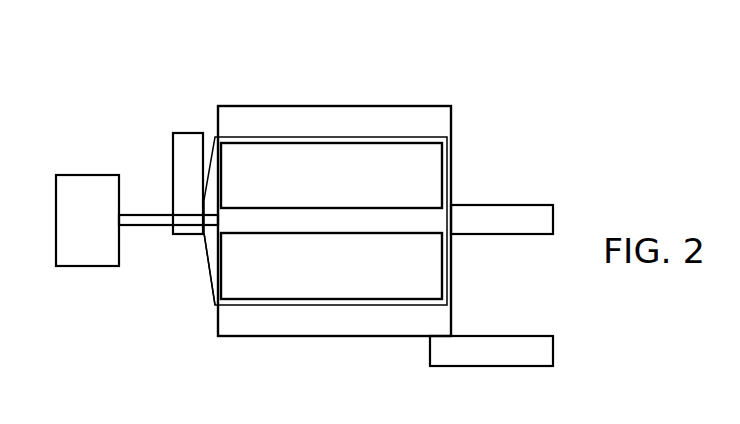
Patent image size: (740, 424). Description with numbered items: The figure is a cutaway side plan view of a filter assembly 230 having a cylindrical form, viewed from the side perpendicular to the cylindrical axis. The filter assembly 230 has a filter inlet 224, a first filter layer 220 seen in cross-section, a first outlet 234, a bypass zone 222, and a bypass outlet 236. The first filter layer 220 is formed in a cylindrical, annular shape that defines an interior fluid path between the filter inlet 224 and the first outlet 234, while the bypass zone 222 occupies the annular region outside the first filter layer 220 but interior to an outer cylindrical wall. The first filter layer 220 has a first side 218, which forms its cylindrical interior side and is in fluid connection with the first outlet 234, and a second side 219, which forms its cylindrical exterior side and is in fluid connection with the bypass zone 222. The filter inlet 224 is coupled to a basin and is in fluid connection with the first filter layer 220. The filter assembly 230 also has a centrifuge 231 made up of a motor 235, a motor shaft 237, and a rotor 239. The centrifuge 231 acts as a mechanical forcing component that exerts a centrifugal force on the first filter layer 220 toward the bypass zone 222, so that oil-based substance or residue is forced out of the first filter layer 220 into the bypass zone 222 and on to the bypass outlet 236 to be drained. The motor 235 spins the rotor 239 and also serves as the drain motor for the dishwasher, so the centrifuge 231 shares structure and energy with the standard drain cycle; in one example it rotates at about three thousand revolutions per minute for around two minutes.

The filter assembly 230 is at (565, 61).
The bypass zone 222 is at (413, 106).
The second side 219 is at (352, 139).
The first side 218 is at (280, 232).
The first filter layer 220 is at (287, 135).
The filter inlet 224 is at (188, 132).
The motor shaft 237 is at (152, 214).
The motor 235 is at (88, 174).
The centrifuge 231 is at (84, 279).
The rotor 239 is at (207, 278).
The first outlet 234 is at (498, 205).
The bypass outlet 236 is at (548, 367).